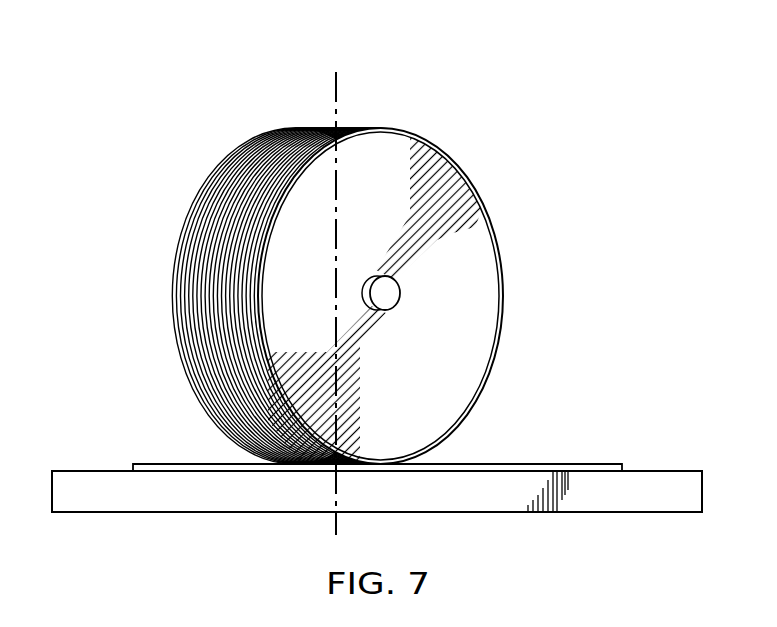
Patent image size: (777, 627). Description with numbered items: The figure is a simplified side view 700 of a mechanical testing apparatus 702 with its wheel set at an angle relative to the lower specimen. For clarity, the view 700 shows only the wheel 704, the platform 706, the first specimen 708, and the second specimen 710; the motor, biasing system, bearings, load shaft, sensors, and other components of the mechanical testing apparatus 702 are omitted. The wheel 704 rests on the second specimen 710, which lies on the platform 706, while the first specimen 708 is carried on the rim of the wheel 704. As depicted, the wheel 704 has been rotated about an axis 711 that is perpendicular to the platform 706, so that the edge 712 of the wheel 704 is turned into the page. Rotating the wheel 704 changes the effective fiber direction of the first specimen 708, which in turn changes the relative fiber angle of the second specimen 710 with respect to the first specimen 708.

The view 700 is at (84, 74).
The mechanical testing apparatus 702 is at (218, 138).
The wheel 704 is at (493, 295).
The platform 706 is at (93, 470).
The first specimen 708 is at (180, 293).
The second specimen 710 is at (175, 462).
The axis 711 is at (333, 87).
The edge 712 is at (446, 419).